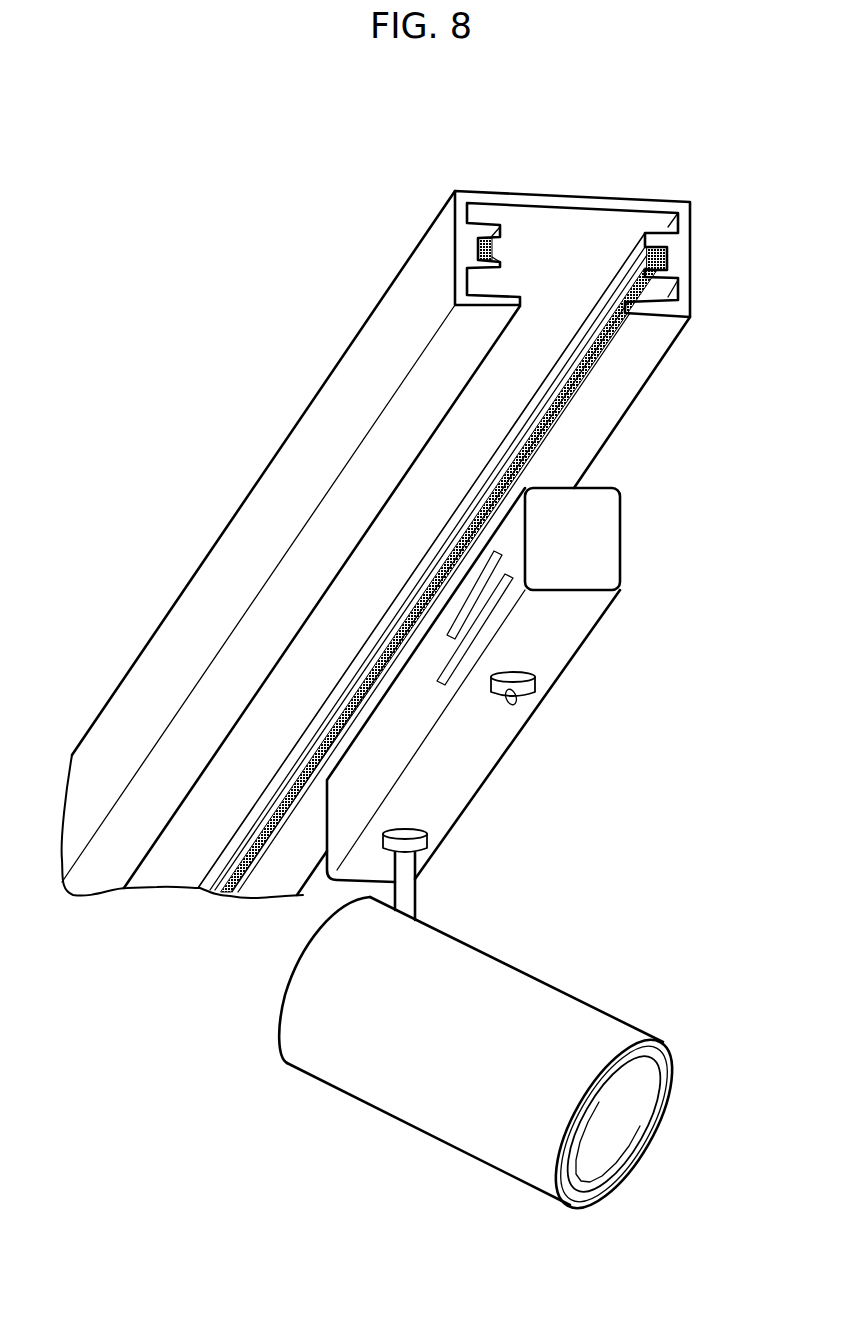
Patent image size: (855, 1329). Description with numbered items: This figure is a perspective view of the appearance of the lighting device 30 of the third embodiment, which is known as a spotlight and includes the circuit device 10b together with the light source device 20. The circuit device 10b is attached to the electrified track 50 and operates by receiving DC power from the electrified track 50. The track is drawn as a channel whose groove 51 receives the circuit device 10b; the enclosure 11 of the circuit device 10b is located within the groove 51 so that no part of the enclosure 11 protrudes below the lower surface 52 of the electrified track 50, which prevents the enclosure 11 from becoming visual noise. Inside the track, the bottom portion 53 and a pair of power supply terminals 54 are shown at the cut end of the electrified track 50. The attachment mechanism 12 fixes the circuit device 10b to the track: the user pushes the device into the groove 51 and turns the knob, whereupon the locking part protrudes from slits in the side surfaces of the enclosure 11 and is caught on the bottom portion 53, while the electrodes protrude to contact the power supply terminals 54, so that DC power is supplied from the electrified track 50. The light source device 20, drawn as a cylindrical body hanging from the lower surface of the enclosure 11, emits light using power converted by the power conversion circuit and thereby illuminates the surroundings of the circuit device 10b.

The electrified track 50 is at (690, 157).
The groove 51 is at (548, 342).
The lower surface 52 is at (638, 353).
The bottom portion 53 is at (648, 310).
The power supply terminals 54 is at (668, 257).
The circuit device 10b is at (582, 667).
The enclosure 11 is at (613, 548).
The attachment mechanism 12 is at (528, 695).
The lighting device 30 is at (293, 915).
The light source device 20 is at (342, 1070).